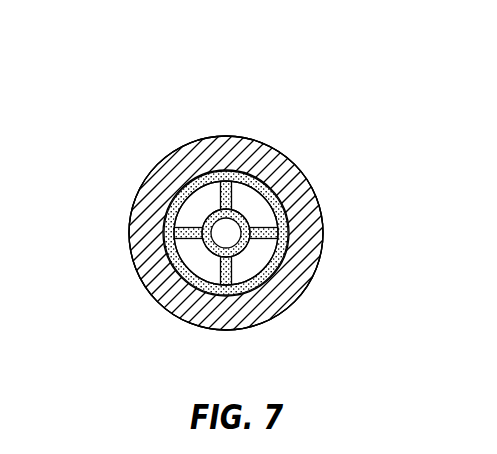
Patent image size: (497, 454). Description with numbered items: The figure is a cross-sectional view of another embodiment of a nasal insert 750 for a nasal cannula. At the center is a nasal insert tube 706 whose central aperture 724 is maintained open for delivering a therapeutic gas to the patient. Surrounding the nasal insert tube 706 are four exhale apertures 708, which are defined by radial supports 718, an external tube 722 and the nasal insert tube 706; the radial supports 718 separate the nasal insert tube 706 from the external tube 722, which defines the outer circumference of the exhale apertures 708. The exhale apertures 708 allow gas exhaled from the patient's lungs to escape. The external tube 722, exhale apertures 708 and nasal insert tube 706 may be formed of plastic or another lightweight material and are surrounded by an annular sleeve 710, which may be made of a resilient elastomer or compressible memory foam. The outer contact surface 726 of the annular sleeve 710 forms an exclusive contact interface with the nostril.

The nasal insert 750 is at (108, 104).
The nasal insert tube 706 is at (295, 165).
The outer contact surface 726 is at (175, 150).
The annular sleeve 710 is at (307, 233).
The external tube 722 is at (173, 193).
The radial supports 718 is at (226, 192).
The exhale apertures 708 is at (278, 218).
The central aperture 724 is at (223, 232).